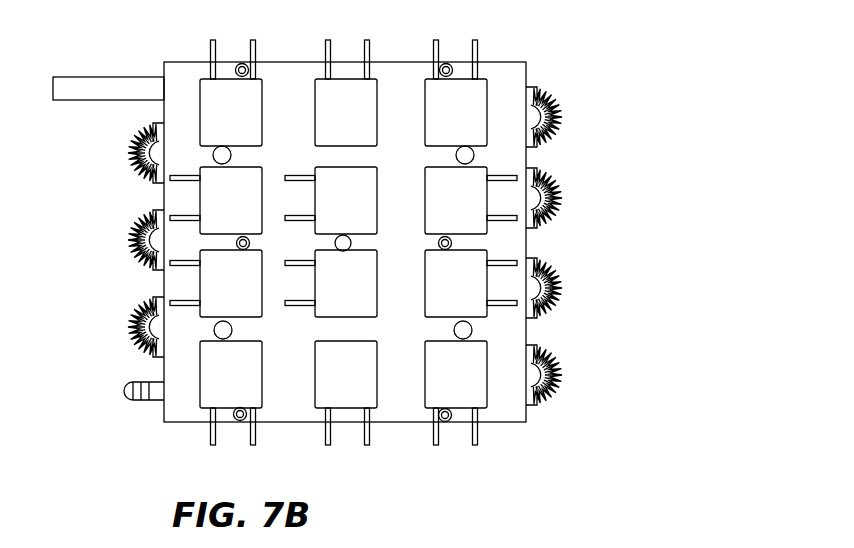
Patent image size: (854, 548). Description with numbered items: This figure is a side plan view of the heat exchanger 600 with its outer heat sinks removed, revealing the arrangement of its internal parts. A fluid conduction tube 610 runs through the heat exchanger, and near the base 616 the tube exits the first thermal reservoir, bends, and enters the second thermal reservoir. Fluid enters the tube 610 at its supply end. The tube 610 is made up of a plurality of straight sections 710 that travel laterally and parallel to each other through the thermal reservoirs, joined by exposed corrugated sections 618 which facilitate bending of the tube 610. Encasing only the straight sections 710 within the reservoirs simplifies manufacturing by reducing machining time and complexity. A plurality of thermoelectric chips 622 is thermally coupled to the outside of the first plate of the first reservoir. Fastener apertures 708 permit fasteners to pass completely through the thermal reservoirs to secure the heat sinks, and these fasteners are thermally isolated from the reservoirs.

The heat exchanger 600 is at (593, 393).
The fluid conduction tube 610 is at (87, 85).
The base 616 is at (180, 422).
The corrugated sections 618 is at (568, 103).
The thermoelectric chips 622 is at (250, 125).
The fastener apertures 708 is at (231, 155).
The straight sections 710 is at (533, 88).